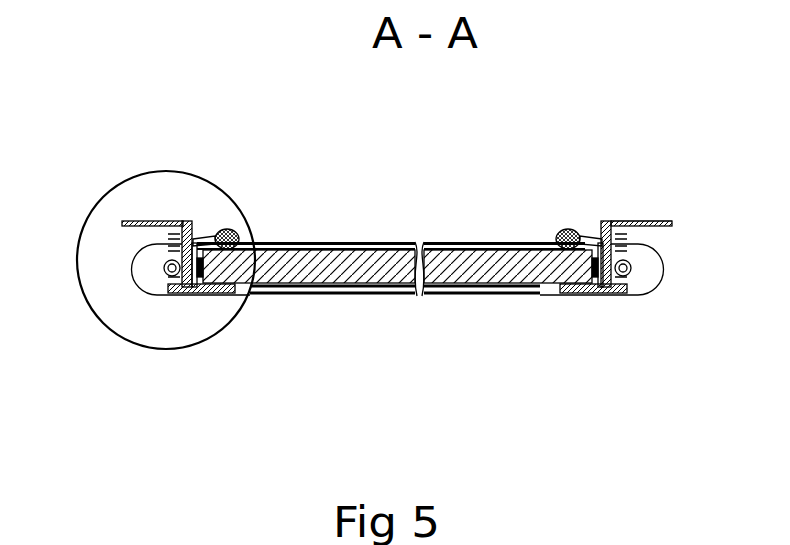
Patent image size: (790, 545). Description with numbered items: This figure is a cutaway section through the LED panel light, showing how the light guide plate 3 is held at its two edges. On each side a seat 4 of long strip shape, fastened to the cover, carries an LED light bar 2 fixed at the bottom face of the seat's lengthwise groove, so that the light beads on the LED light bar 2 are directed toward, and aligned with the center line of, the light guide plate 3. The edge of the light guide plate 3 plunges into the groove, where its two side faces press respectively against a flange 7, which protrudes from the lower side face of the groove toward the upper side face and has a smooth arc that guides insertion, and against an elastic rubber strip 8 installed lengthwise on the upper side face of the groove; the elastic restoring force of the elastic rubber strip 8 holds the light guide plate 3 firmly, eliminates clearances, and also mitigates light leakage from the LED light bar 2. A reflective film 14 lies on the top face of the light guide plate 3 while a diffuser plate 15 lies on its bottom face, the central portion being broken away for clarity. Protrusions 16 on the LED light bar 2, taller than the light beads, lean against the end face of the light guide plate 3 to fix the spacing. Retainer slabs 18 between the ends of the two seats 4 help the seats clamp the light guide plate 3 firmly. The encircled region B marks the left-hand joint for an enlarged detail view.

The LED light bar 2 is at (186, 221).
The light guide plate 3 is at (338, 263).
The seat 4 is at (610, 222).
The flange 7 is at (232, 290).
The elastic rubber strip 8 is at (240, 229).
The reflective film 14 is at (385, 243).
The diffuser plate 15 is at (388, 293).
The protrusion 16 is at (200, 243).
The retainer slab 18 is at (637, 283).
The detail circle B is at (137, 344).